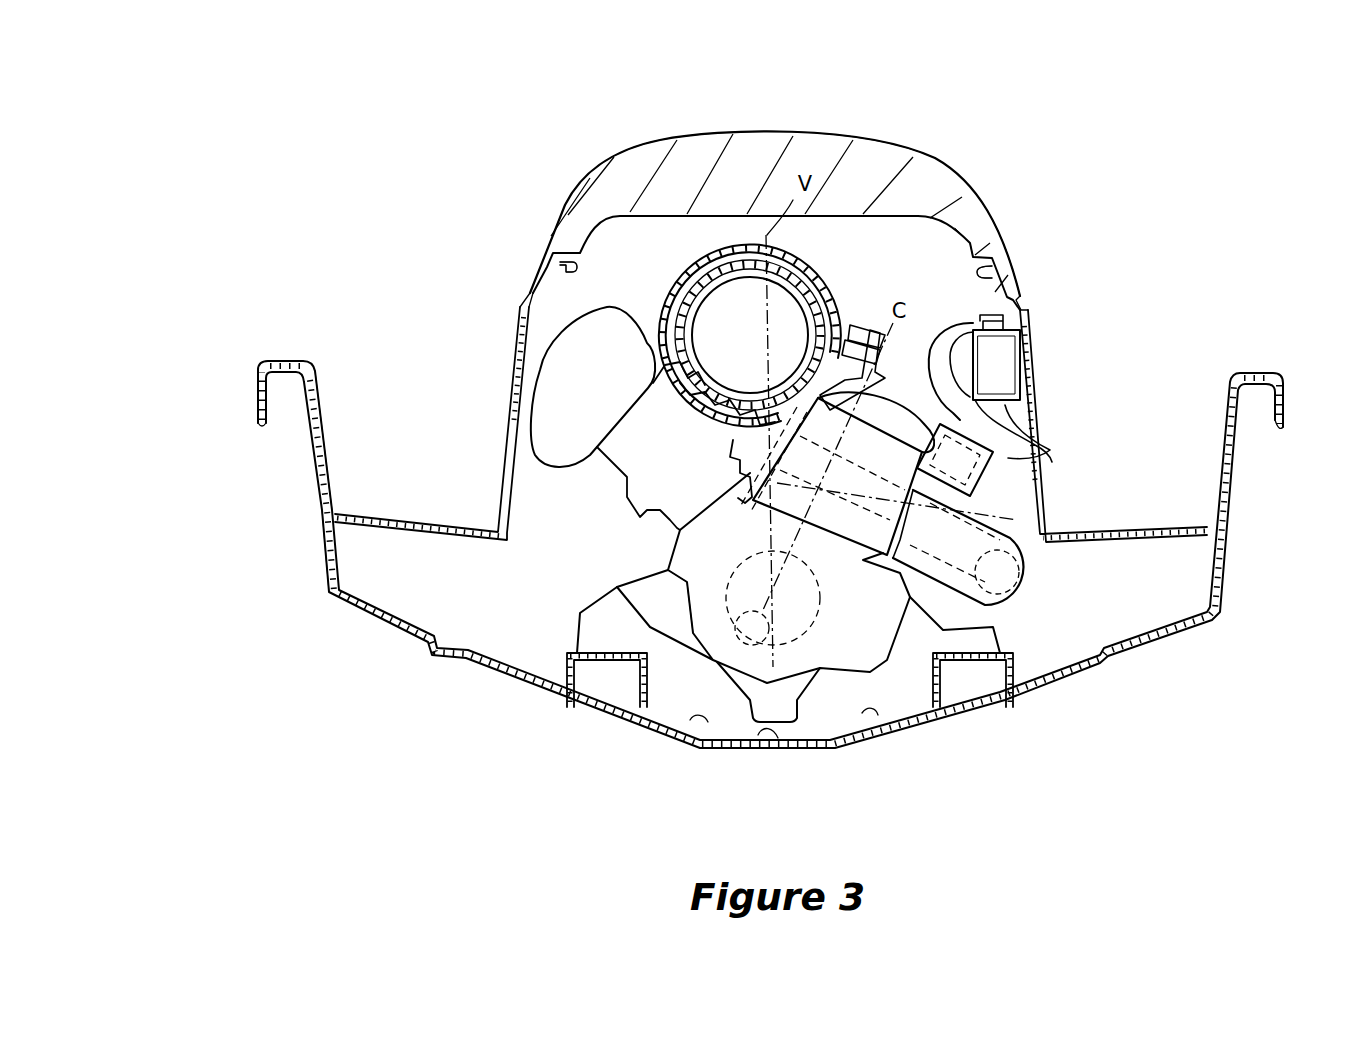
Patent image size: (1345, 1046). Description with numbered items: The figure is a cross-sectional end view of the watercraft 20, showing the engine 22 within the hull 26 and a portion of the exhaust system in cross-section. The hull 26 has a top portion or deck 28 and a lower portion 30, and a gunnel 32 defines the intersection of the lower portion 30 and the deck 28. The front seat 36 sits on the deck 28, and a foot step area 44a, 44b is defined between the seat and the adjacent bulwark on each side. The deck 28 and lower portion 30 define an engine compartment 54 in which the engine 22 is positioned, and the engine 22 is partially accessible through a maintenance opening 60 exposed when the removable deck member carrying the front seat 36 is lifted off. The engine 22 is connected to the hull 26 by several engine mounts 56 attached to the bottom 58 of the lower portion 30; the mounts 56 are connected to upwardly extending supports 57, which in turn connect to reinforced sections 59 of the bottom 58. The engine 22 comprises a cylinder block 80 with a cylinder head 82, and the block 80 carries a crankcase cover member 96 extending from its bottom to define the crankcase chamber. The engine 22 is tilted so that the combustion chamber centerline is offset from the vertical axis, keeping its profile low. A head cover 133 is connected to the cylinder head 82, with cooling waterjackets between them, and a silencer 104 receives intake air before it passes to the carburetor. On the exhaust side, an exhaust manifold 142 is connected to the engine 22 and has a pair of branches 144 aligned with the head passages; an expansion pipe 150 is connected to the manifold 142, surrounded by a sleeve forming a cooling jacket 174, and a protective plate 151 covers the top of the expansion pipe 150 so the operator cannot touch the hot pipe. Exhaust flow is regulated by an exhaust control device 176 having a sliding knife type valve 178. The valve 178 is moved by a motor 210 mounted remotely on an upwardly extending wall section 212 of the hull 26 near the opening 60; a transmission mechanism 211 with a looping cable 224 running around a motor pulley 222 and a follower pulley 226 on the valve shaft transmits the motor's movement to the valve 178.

The watercraft 20 is at (1037, 120).
The engine 22 is at (862, 268).
The hull 26 is at (302, 441).
The deck 28 is at (327, 407).
The lower portion 30 is at (310, 505).
The gunnel 32 is at (253, 395).
The front seat 36 is at (755, 135).
The foot step area 44a is at (405, 512).
The foot step area 44b is at (1180, 518).
The engine compartment 54 is at (913, 257).
The engine mount 56 is at (577, 640).
The support 57 is at (640, 683).
The bottom 58 is at (757, 730).
The reinforced section 59 is at (697, 718).
The maintenance opening 60 is at (985, 252).
The cylinder block 80 is at (740, 472).
The cylinder head 82 is at (600, 455).
The crankcase cover member 96 is at (667, 570).
The silencer 104 is at (545, 355).
The head cover 133 is at (960, 257).
The exhaust manifold 142 is at (1043, 572).
The branch 144 is at (1027, 523).
The expansion pipe 150 is at (838, 299).
The protective plate 151 is at (687, 283).
The cooling jacket 174 is at (800, 370).
The exhaust control device 176 is at (1018, 432).
The sliding knife type valve 178 is at (980, 477).
The motor 210 is at (1020, 347).
The transmission mechanism 211 is at (963, 309).
The wall section 212 is at (1033, 373).
The motor pulley 222 is at (1003, 290).
The looping cable 224 is at (967, 394).
The follower pulley 226 is at (1005, 458).